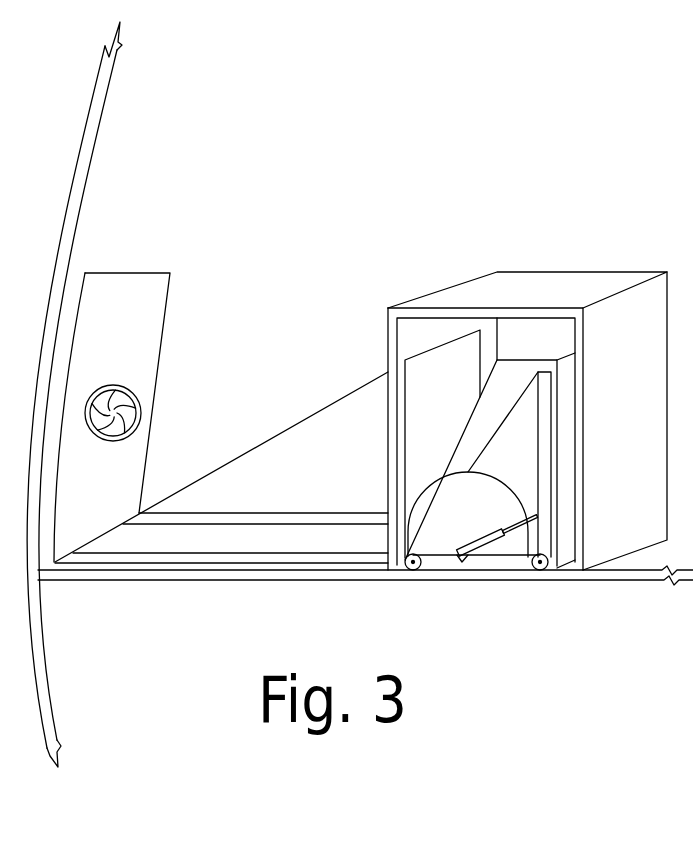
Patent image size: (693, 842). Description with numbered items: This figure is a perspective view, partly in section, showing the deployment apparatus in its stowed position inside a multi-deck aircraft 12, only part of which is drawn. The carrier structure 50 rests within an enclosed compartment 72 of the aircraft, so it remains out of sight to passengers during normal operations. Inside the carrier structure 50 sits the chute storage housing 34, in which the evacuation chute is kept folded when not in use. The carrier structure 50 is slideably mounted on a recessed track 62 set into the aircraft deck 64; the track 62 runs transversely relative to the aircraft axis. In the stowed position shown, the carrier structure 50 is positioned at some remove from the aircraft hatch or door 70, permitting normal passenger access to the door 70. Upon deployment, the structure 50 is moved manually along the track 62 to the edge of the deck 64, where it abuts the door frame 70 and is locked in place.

The multi-deck aircraft 12 is at (272, 267).
The aircraft hatch or door 70 is at (135, 330).
The recessed track 62 is at (298, 562).
The aircraft deck 64 is at (218, 576).
The carrier structure 50 is at (575, 290).
The enclosed compartment 72 is at (457, 318).
The chute storage housing 34 is at (444, 532).